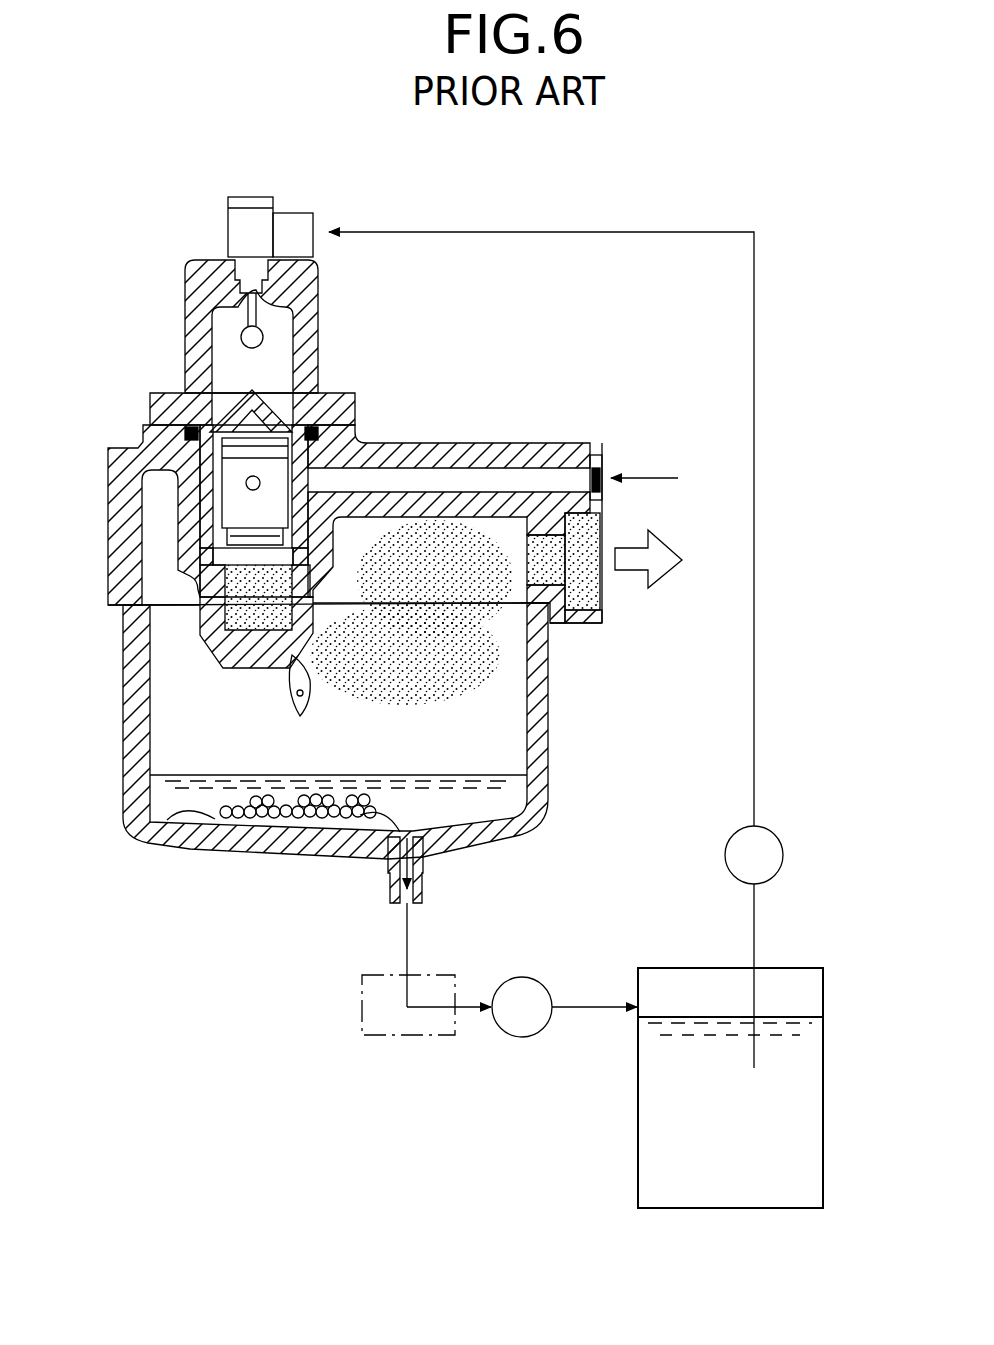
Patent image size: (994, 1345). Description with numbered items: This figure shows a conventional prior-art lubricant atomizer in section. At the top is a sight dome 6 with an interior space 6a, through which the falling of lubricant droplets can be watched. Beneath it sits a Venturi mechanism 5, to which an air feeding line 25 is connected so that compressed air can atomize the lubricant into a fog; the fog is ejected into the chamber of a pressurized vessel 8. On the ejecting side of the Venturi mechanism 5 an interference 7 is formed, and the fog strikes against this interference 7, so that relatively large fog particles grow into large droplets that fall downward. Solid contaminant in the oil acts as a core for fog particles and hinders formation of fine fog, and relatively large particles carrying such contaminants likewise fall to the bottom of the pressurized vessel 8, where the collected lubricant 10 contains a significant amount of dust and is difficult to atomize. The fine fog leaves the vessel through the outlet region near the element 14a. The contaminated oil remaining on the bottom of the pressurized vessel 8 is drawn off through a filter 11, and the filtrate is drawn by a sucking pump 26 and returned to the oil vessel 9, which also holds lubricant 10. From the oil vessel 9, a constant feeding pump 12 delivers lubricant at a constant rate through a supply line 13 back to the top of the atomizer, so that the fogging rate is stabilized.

The Venturi mechanism 5 is at (228, 512).
The top sight dome 6 is at (305, 335).
The valve chamber 6a is at (218, 347).
The interference 7 is at (287, 658).
The pressurized vessel 8 is at (137, 742).
The oil vessel 9 is at (638, 1160).
The liquid 10 is at (503, 798).
The filter 11 is at (230, 834).
The constant feeding pump 12 is at (782, 840).
The supply pipe 13 is at (755, 692).
The filter 14a is at (602, 597).
The air feeding line 25 is at (508, 477).
The sucking pump 26 is at (522, 977).